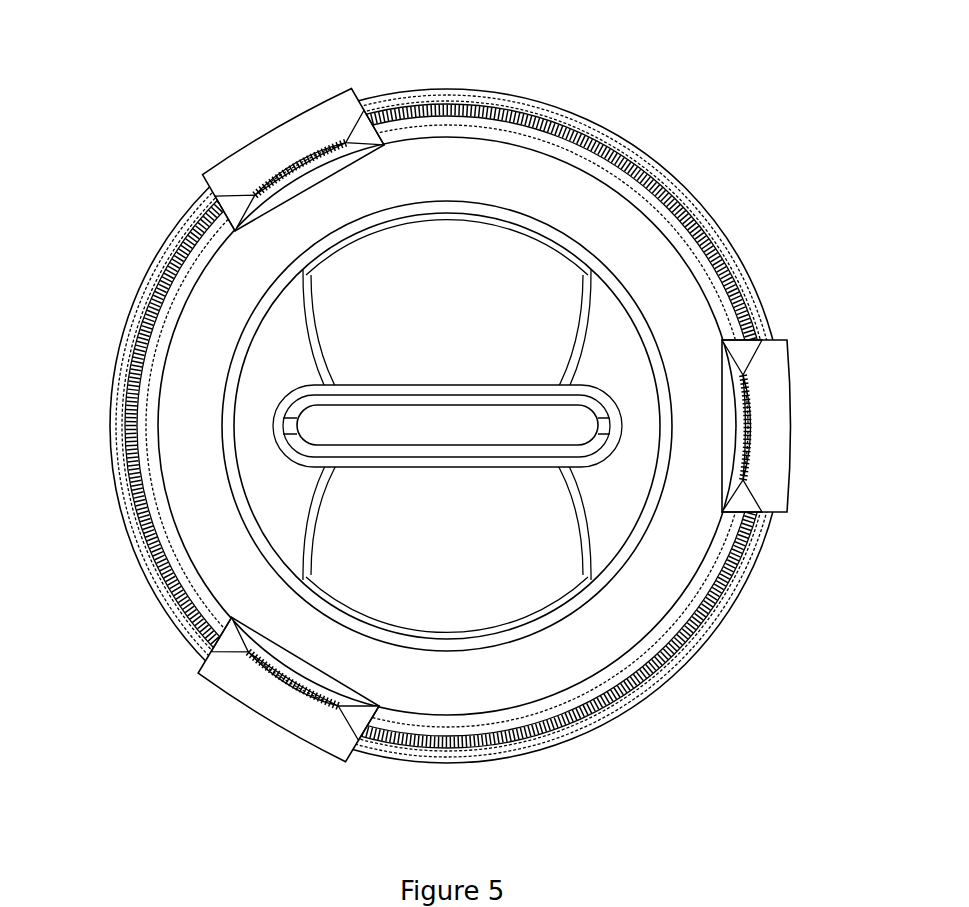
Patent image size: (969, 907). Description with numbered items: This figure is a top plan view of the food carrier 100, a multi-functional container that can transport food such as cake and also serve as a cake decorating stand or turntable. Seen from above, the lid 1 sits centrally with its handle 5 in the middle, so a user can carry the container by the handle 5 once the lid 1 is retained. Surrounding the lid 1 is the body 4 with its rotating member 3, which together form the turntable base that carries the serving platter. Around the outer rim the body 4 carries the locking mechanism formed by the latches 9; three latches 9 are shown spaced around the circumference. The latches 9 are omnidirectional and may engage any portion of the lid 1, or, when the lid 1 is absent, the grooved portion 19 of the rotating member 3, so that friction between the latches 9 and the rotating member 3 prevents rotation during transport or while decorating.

The food carrier 100 is at (179, 146).
The lid 1 is at (196, 538).
The rotating member 3 is at (693, 202).
The body 4 is at (619, 132).
The handle 5 is at (565, 437).
The latches 9 is at (259, 131).
The grooved portion 19 is at (730, 289).